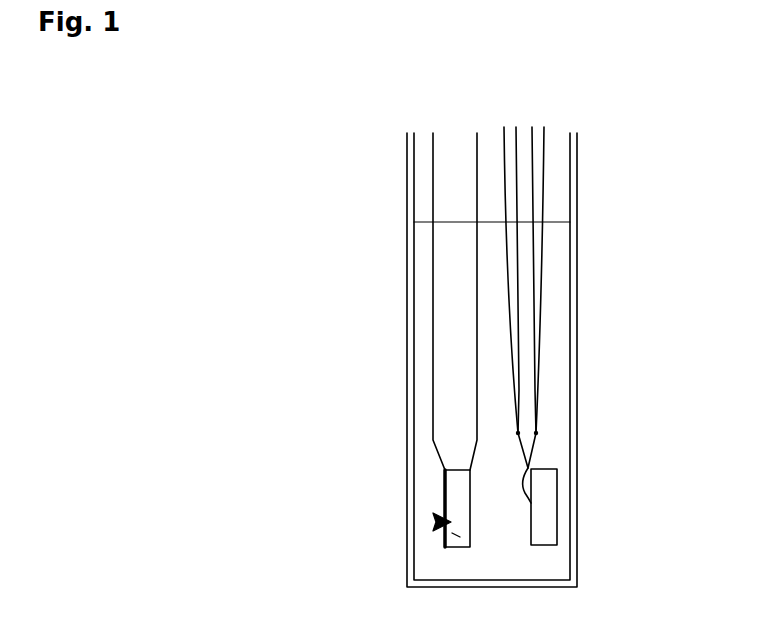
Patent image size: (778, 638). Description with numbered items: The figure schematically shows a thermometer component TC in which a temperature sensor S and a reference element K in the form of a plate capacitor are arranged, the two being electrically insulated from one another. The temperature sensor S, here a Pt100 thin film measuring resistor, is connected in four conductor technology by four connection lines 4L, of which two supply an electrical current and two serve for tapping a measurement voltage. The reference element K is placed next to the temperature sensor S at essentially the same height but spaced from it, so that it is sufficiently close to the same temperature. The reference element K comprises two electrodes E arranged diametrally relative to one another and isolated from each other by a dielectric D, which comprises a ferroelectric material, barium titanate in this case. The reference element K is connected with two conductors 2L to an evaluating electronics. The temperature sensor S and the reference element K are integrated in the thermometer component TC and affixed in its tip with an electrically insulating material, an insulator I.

The thermometer component TC is at (407, 160).
The two conductors 2L is at (477, 357).
The electrodes E is at (468, 517).
The reference element K is at (436, 522).
The dielectric D is at (457, 535).
The connection lines 4L is at (512, 292).
The insulator I is at (550, 347).
The temperature sensor S is at (553, 534).